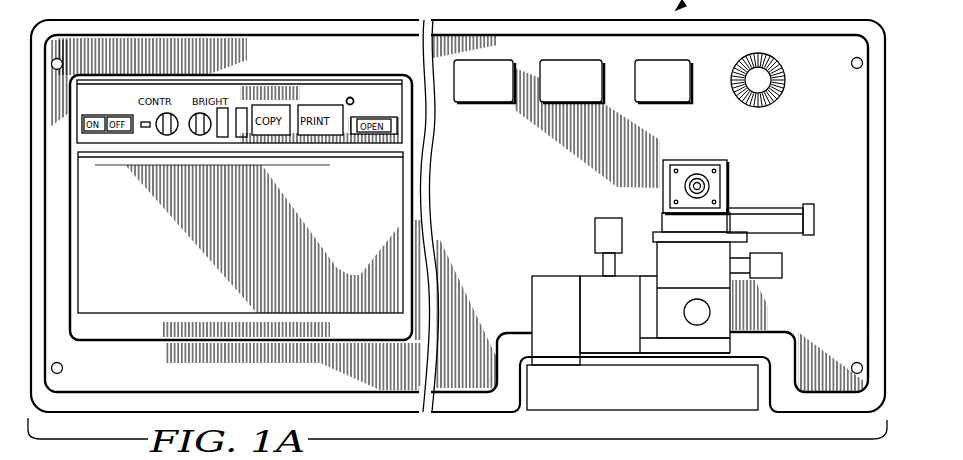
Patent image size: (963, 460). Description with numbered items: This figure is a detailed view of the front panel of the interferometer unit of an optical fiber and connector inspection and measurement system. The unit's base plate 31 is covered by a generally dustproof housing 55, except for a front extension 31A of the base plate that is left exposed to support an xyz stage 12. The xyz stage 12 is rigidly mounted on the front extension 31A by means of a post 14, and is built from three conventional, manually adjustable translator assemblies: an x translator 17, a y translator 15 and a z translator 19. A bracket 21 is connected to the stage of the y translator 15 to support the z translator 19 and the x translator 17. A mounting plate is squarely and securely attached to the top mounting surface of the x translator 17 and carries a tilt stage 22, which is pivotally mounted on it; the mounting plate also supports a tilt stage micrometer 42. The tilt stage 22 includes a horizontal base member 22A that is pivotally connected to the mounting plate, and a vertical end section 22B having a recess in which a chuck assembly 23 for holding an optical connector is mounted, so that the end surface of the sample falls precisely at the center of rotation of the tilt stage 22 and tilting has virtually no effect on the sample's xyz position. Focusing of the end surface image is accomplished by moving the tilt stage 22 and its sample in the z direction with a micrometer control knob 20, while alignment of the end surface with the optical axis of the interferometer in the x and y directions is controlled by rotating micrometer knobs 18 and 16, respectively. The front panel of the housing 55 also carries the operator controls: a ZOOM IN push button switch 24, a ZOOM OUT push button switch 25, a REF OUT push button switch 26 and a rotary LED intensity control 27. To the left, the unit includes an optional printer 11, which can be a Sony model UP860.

The printer 11 is at (254, 242).
The xyz stage 12 is at (656, 304).
The post 14 is at (550, 303).
The y translator 15 is at (608, 340).
The micrometer knob 16 is at (595, 232).
The x translator 17 is at (683, 254).
The micrometer knob 18 is at (802, 280).
The z translator 19 is at (722, 303).
The micrometer control knob 20 is at (713, 322).
The bracket 21 is at (717, 348).
The tilt stage 22 is at (706, 194).
The horizontal base member 22A is at (667, 221).
The vertical end section 22B is at (728, 176).
The chuck assembly 23 is at (673, 180).
The ZOOM IN push button switch 24 is at (500, 104).
The ZOOM OUT push button switch 25 is at (589, 104).
The REF OUT push button switch 26 is at (667, 104).
The rotary LED intensity control 27 is at (820, 67).
The base plate 31 is at (457, 439).
The front extension of base plate 31A is at (727, 395).
The tilt stage micrometer 42 is at (835, 208).
The housing 55 is at (797, 30).